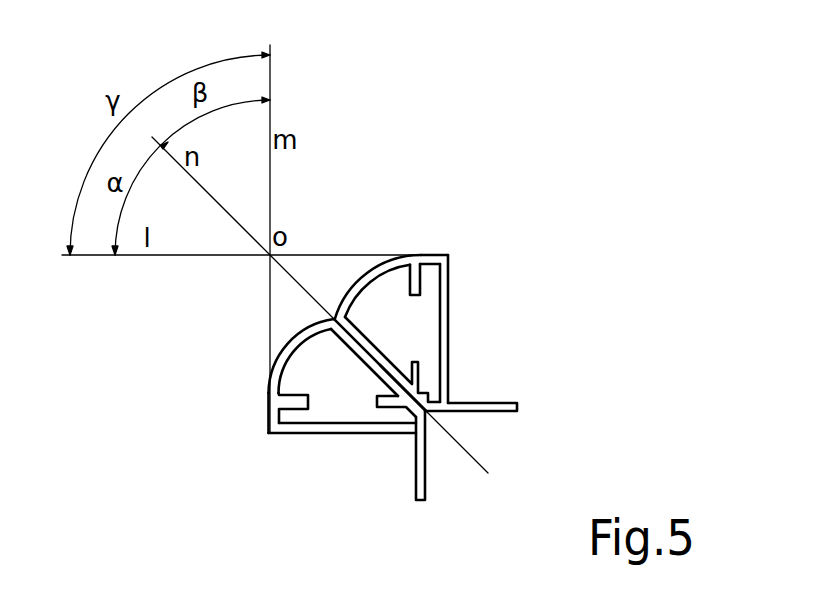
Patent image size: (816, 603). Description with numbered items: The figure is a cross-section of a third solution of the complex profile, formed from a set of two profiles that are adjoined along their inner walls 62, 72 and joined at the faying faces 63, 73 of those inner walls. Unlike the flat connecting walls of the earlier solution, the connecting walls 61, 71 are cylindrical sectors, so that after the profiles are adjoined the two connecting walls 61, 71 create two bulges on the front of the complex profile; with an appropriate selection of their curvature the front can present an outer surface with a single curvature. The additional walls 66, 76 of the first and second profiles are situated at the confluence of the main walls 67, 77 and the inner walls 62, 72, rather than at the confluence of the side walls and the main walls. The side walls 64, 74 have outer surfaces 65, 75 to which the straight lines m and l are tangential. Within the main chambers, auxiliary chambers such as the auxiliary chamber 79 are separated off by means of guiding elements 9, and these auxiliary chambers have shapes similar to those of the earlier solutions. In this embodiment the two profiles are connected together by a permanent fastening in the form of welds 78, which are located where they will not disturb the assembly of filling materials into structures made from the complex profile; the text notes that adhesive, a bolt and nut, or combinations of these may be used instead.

The connecting wall 61 is at (347, 300).
The inner wall 62 is at (358, 318).
The faying face 63 is at (362, 338).
The side wall 64 is at (421, 262).
The outer surface 65 is at (414, 290).
The additional wall 66 is at (482, 403).
The main wall 67 is at (446, 338).
The guiding element 9 is at (425, 270).
The connecting wall 71 is at (312, 322).
The inner wall 72 is at (322, 336).
The faying face 73 is at (348, 348).
The side wall 74 is at (292, 403).
The outer surface 75 is at (274, 413).
The additional wall 76 is at (420, 477).
The main wall 77 is at (330, 428).
The weld 78 is at (488, 473).
The auxiliary chamber 79 is at (388, 412).